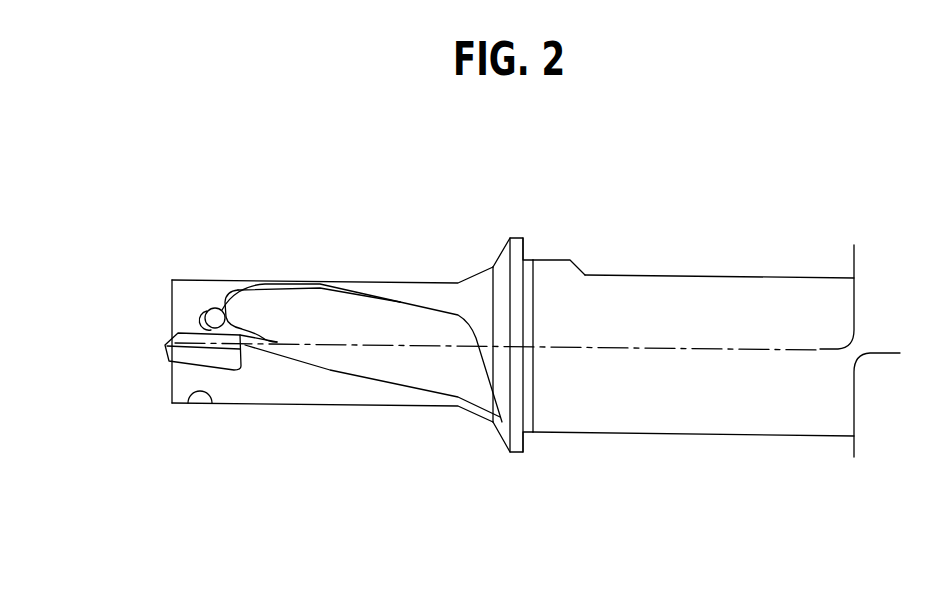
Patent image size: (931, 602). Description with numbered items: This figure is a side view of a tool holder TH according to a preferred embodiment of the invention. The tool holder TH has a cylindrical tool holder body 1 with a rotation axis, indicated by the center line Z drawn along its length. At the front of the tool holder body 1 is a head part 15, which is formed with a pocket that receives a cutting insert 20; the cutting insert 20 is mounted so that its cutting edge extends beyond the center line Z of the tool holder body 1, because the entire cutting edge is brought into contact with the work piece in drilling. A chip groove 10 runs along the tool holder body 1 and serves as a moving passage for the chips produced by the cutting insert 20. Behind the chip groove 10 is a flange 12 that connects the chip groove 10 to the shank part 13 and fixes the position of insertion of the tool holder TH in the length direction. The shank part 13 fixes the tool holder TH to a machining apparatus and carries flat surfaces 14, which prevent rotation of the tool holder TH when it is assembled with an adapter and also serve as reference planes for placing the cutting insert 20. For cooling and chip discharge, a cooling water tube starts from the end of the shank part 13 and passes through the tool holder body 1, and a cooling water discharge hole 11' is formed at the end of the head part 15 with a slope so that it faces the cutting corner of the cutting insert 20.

The tool holder body 1 is at (613, 418).
The chip groove 10 is at (398, 317).
The cooling water discharge hole 11' is at (311, 278).
The flange 12 is at (509, 455).
The shank part 13 is at (775, 437).
The flat surfaces 14 is at (636, 273).
The head part 15 is at (217, 317).
The cutting insert 20 is at (165, 362).
The center line Z is at (175, 343).
The tool holder TH is at (708, 211).